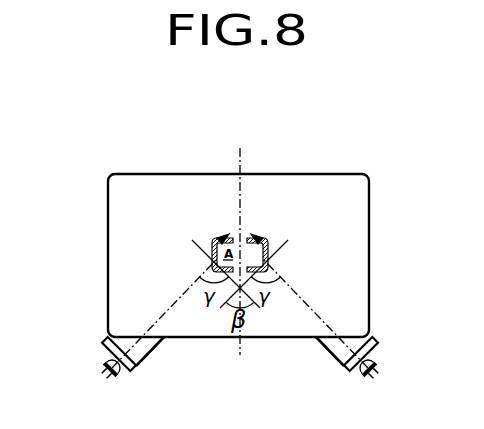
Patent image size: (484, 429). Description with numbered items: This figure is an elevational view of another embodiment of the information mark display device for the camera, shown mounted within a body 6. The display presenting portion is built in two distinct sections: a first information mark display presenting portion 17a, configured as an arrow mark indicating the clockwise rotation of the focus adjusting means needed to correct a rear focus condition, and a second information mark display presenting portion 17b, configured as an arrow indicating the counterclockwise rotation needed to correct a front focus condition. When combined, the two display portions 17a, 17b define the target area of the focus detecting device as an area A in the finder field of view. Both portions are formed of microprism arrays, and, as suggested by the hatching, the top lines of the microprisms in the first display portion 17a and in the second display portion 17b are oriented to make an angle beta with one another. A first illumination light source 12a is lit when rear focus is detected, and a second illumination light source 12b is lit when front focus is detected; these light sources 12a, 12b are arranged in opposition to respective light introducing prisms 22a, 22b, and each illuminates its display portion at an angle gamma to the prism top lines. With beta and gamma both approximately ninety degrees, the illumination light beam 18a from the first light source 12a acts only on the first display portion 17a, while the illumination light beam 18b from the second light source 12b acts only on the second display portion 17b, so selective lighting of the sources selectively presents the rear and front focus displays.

The housing 6 is at (346, 171).
The first information mark display presenting portion 17a is at (215, 233).
The second information mark display presenting portion 17b is at (265, 233).
The illumination light beam 18a is at (182, 296).
The illumination light beam 18b is at (296, 296).
The light introducing prism 22a is at (108, 342).
The light introducing prism 22b is at (370, 342).
The first illumination light source 12a is at (115, 378).
The second illumination light source 12b is at (362, 378).